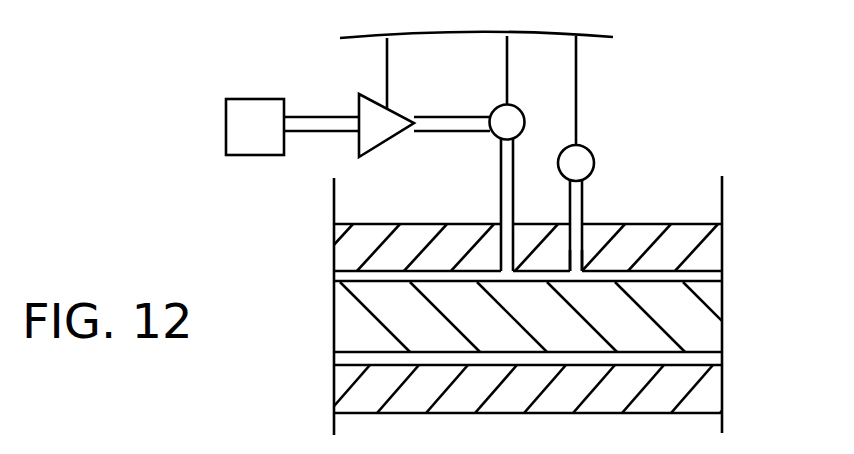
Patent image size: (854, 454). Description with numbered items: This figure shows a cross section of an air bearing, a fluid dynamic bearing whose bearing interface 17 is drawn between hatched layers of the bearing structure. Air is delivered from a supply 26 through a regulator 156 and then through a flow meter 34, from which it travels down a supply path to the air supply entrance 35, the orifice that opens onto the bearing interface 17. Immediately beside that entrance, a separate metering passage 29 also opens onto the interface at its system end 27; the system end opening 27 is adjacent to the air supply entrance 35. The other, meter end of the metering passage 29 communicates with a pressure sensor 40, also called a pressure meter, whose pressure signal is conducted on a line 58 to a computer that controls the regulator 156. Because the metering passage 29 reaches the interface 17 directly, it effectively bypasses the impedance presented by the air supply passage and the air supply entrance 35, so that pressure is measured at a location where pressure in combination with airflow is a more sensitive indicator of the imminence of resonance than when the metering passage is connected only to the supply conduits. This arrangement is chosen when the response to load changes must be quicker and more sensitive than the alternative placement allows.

The bearing interface 17 is at (703, 276).
The supply 26 is at (255, 127).
The pump 156 is at (386, 97).
The flow meter 34 is at (507, 88).
The air supply entrance 35 is at (505, 272).
The line 58 is at (592, 90).
The pressure sensor 40 is at (576, 163).
The metering passage 29 is at (573, 218).
The system end 27 is at (574, 272).